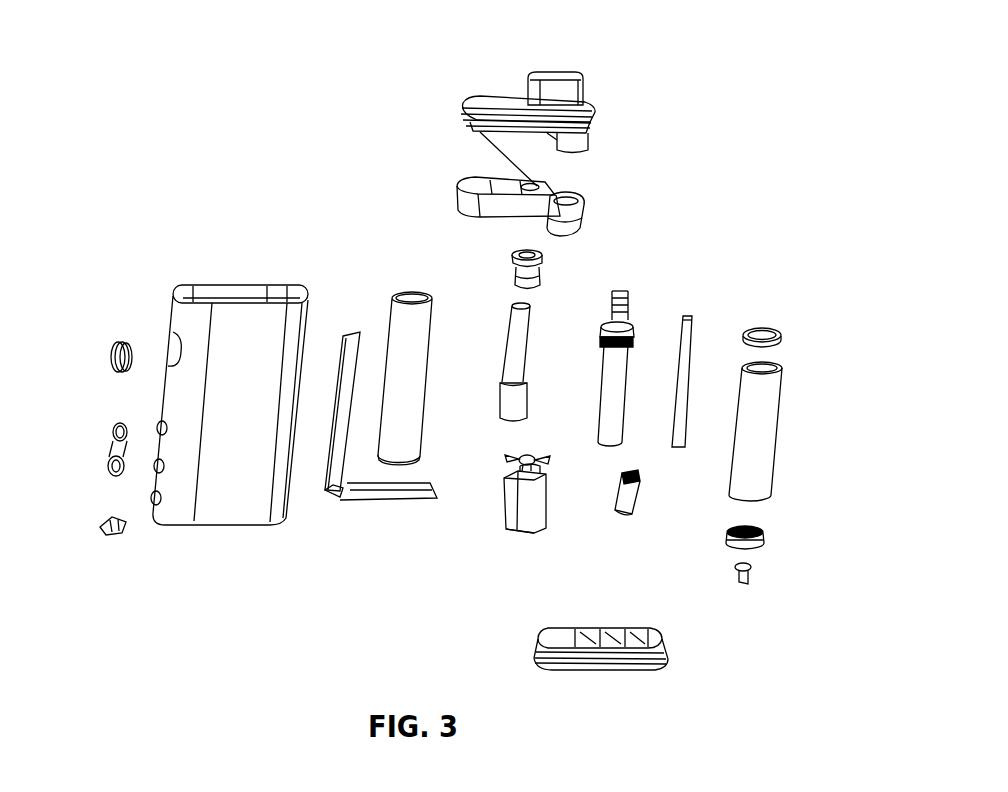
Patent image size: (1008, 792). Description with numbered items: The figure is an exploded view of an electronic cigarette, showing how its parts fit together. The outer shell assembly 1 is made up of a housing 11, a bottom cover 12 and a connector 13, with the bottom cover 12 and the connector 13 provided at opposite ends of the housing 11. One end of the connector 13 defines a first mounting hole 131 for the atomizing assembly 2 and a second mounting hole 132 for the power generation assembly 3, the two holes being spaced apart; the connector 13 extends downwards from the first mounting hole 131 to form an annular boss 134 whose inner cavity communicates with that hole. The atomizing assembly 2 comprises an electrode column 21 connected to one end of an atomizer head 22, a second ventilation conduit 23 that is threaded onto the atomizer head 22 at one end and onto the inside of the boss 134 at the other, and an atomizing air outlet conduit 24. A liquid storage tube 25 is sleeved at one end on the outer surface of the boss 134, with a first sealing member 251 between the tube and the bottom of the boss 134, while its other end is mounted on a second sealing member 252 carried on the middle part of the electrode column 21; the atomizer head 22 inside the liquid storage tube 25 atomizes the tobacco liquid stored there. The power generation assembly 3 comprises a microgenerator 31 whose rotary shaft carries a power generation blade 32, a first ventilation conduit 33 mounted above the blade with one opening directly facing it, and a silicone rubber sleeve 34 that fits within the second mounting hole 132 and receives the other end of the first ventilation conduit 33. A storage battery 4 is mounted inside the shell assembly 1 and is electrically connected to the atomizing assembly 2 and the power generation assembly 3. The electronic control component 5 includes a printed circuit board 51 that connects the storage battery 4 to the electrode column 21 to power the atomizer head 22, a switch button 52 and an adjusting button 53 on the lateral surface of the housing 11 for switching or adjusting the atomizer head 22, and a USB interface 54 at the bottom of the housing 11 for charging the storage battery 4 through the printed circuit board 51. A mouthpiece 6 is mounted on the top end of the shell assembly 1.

The shell assembly 1 is at (248, 343).
The housing 11 is at (200, 358).
The bottom cover 12 is at (593, 643).
The connector 13 is at (457, 182).
The first mounting hole 131 is at (573, 200).
The second mounting hole 132 is at (463, 100).
The boss 134 is at (578, 210).
The atomizing assembly 2 is at (739, 379).
The electrode column 21 is at (752, 570).
The atomizer head 22 is at (633, 517).
The second ventilation conduit 23 is at (638, 343).
The atomizing air outlet conduit 24 is at (693, 343).
The liquid storage tube 25 is at (757, 440).
The first sealing member 251 is at (780, 338).
The second sealing member 252 is at (765, 535).
The power generation assembly 3 is at (461, 532).
The microgenerator 31 is at (503, 517).
The power generation blade 32 is at (507, 475).
The first ventilation conduit 33 is at (517, 367).
The sleeve 34 is at (515, 255).
The storage battery 4 is at (405, 325).
The electronic control component 5 is at (385, 495).
The printed circuit board 51 is at (332, 490).
The switch button 52 is at (115, 345).
The adjusting button 53 is at (115, 425).
The USB interface 54 is at (108, 515).
The mouthpiece 6 is at (557, 90).